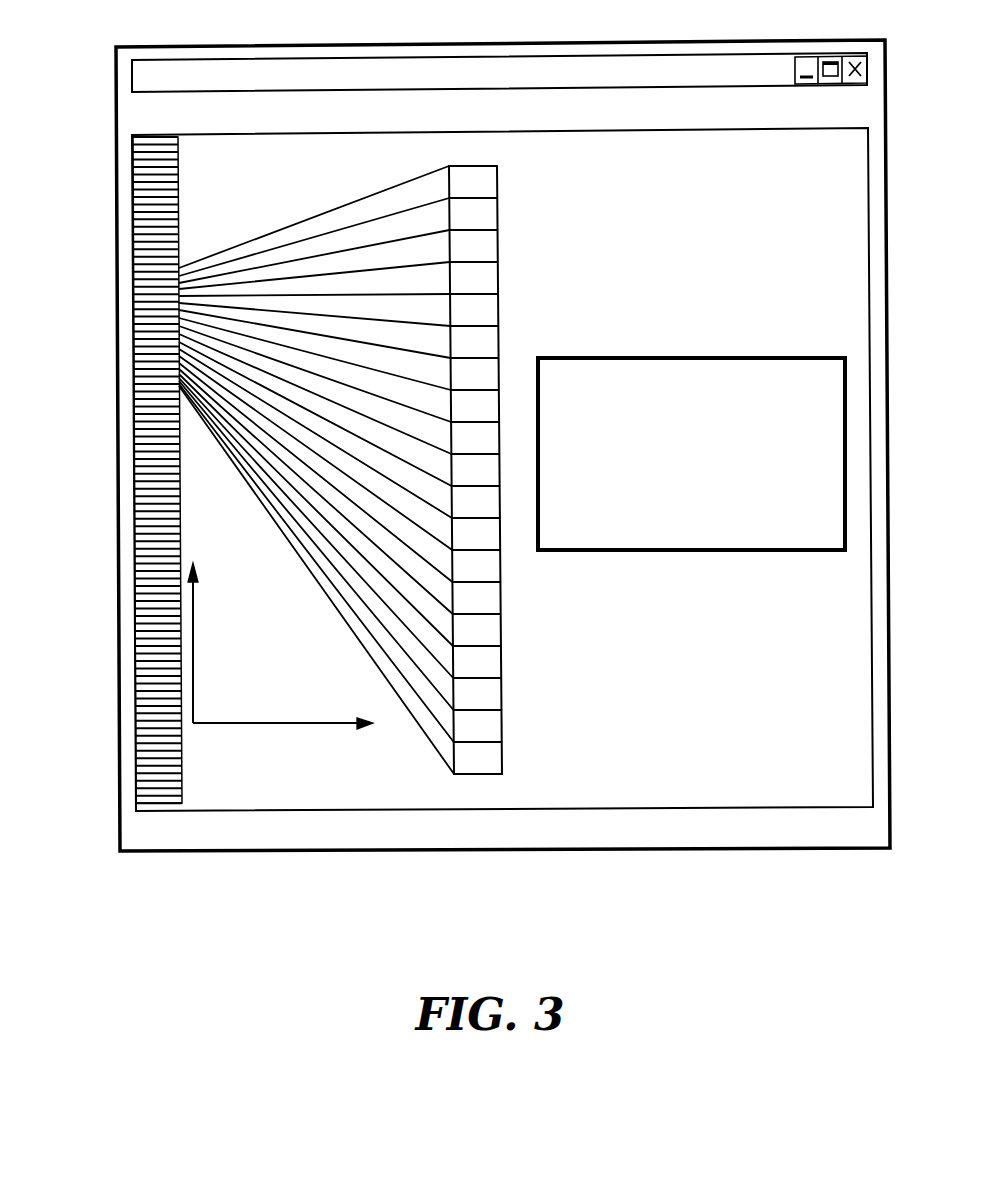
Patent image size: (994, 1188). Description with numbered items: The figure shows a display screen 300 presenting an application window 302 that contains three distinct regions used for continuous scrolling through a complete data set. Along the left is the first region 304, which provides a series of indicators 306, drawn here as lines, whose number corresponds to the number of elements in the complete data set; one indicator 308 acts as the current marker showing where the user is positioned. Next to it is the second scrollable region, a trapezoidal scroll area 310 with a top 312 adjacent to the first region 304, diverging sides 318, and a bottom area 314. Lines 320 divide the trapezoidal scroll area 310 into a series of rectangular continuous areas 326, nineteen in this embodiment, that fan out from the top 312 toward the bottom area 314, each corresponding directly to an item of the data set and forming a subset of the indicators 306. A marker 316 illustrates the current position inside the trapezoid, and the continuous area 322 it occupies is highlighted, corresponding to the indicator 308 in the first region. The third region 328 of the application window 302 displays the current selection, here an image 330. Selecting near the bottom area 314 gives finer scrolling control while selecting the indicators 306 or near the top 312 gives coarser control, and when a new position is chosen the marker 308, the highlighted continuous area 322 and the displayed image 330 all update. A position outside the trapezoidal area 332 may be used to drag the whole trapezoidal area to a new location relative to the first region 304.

The display screen 300 is at (586, 975).
The application window 302 is at (678, 788).
The first region 304 is at (130, 137).
The indicators 306 is at (130, 182).
The indicator 308 is at (133, 322).
The trapezoidal scroll area 310 is at (498, 185).
The top 312 is at (178, 268).
The bottom area 314 is at (485, 632).
The marker 316 is at (228, 338).
The sides 318 is at (315, 573).
The lines 320 is at (418, 208).
The continuous area 322 is at (427, 425).
The continuous areas 326 is at (437, 222).
The third region 328 is at (693, 552).
The image 330 is at (694, 433).
The position outside the trapezoidal area 332 is at (307, 155).